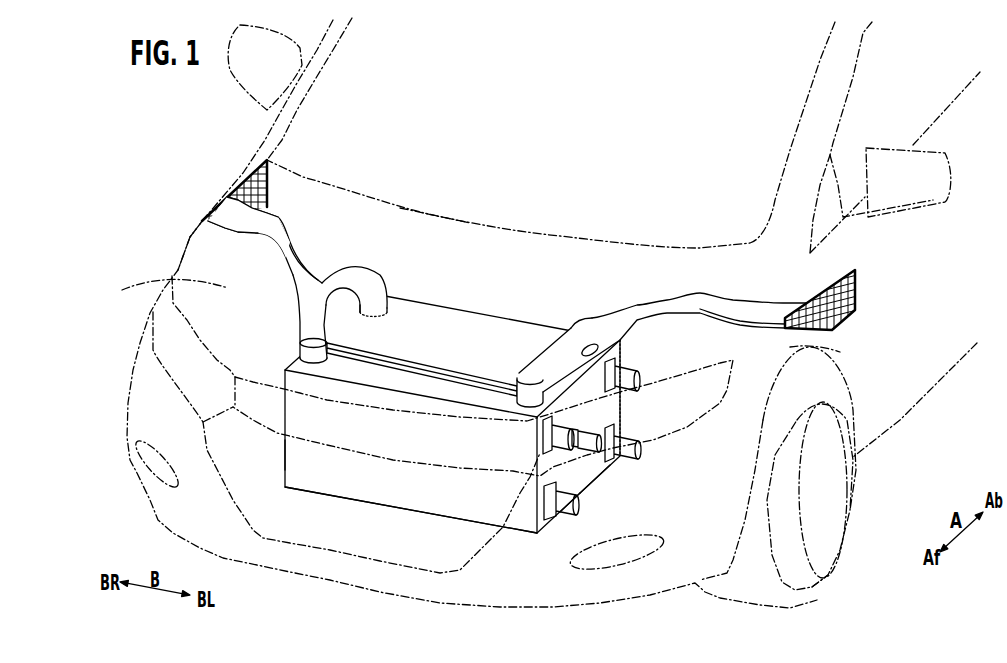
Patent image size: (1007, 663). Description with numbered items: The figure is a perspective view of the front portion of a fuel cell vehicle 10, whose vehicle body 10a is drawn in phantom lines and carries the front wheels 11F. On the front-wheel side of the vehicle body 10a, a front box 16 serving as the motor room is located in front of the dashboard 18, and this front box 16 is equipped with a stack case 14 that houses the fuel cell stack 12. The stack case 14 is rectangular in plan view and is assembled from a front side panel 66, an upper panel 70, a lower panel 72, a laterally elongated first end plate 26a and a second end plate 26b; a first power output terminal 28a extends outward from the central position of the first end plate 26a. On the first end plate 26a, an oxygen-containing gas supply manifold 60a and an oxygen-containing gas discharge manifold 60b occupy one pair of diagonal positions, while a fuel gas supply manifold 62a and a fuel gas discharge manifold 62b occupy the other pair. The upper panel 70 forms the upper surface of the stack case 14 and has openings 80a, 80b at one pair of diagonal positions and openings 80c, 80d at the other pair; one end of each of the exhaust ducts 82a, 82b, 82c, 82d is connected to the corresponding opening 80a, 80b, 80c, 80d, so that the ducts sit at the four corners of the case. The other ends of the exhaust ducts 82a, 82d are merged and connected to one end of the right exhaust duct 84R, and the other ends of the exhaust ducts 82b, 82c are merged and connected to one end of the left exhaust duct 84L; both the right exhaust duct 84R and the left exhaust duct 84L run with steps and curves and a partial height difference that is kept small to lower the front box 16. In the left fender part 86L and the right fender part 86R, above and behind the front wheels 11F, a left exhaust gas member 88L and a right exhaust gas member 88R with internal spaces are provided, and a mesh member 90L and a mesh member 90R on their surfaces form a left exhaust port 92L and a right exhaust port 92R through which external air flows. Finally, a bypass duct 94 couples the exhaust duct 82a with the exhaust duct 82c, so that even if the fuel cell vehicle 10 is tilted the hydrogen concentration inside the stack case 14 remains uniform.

The fuel cell vehicle 10 is at (174, 110).
The vehicle body 10a is at (188, 222).
The front wheels 11F is at (823, 567).
The fuel cell stack 12 is at (423, 506).
The stack case 14 is at (397, 514).
The front box 16 is at (165, 290).
The dashboard 18 is at (439, 219).
The first end plate 26a is at (580, 488).
The second end plate 26b is at (283, 458).
The first power output terminal 28a is at (597, 477).
The oxygen-containing gas supply manifold 60a is at (639, 374).
The oxygen-containing gas discharge manifold 60b is at (567, 514).
The fuel gas supply manifold 62a is at (548, 434).
The fuel gas discharge manifold 62b is at (625, 436).
The front side panel 66 is at (327, 483).
The upper panel 70 is at (470, 312).
The lower panel 72 is at (352, 503).
The opening 80a is at (300, 353).
The opening 80b is at (583, 316).
The opening 80c is at (520, 378).
The opening 80d is at (374, 318).
The exhaust duct 82a is at (301, 326).
The exhaust duct 82b is at (594, 342).
The exhaust duct 82c is at (550, 358).
The exhaust duct 82d is at (383, 283).
The left exhaust duct 84L is at (735, 300).
The right exhaust duct 84R is at (255, 228).
The left fender part 86L is at (850, 345).
The right fender part 86R is at (190, 236).
The left exhaust gas member 88L is at (846, 309).
The right exhaust gas member 88R is at (272, 174).
The mesh member 90L is at (845, 294).
The mesh member 90R is at (270, 188).
The left exhaust port 92L is at (848, 318).
The right exhaust port 92R is at (270, 172).
The bypass duct 94 is at (428, 362).